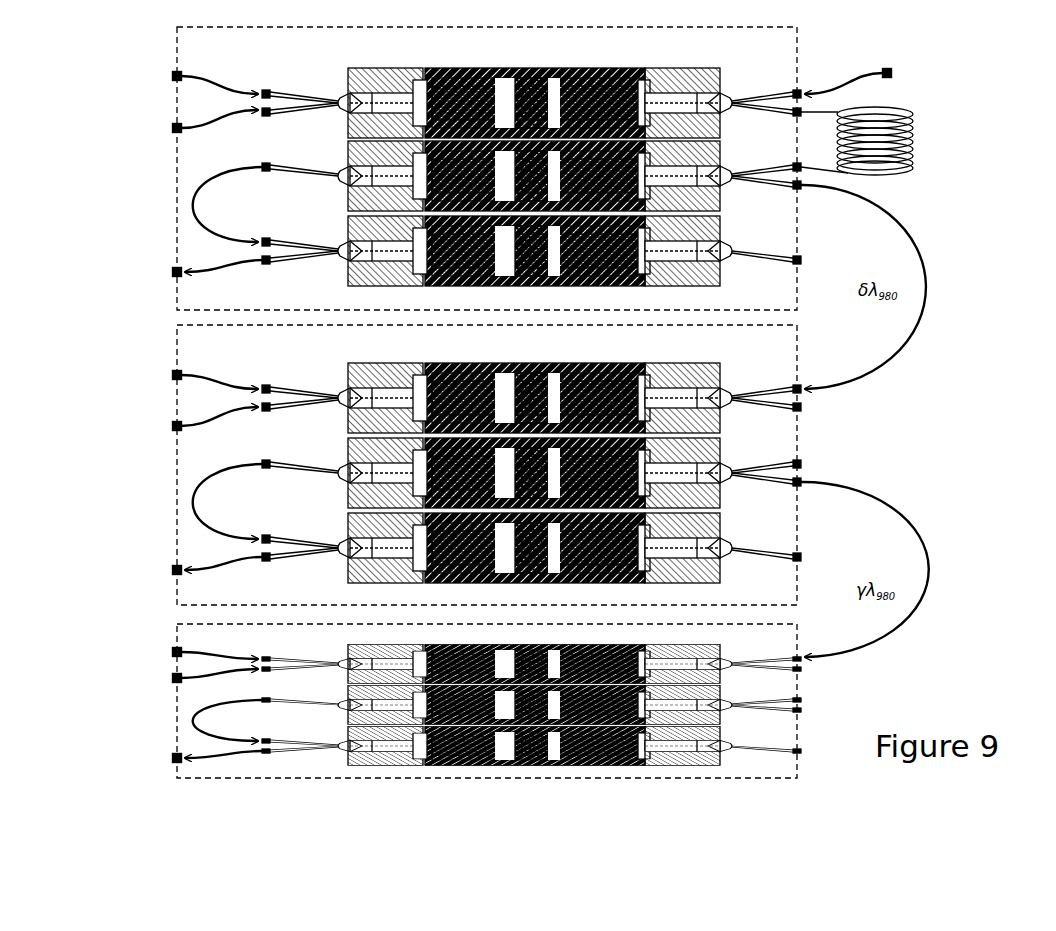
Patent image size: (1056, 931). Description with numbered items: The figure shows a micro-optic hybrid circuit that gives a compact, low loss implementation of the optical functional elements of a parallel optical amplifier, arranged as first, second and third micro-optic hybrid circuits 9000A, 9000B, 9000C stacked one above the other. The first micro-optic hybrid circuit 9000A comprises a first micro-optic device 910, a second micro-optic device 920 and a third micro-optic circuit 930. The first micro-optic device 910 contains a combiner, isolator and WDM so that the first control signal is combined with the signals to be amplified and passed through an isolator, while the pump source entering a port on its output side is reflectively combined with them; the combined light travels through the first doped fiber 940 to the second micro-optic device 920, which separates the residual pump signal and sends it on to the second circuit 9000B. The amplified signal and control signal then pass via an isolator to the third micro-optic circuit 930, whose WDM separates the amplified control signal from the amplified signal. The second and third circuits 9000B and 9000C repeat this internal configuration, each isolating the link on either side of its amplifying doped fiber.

The first micro-optic device 910 is at (680, 62).
The second micro-optic device 920 is at (348, 155).
The third micro-optic circuit 930 is at (348, 283).
The first doped fiber 940 is at (925, 153).
The first micro-optic hybrid circuit 9000A is at (532, 173).
The second micro-optic hybrid circuit 9000B is at (487, 465).
The third micro-optic hybrid circuit 9000C is at (454, 701).